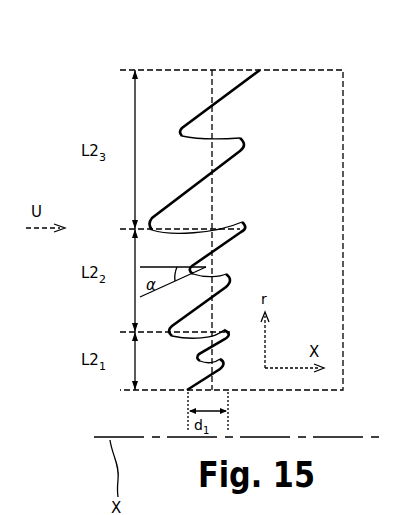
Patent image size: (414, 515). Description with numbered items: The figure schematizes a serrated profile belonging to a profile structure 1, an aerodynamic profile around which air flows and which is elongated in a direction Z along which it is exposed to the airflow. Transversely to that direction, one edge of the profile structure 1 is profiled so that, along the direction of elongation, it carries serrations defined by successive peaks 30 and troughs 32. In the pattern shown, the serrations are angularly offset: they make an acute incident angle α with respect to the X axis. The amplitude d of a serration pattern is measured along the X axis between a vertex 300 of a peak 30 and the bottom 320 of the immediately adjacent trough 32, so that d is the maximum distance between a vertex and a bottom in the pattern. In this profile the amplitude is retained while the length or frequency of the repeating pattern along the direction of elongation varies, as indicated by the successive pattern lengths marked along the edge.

The profile structure 1 is at (261, 71).
The peak 30 is at (235, 202).
The trough 32 is at (234, 80).
The vertex 300 is at (180, 130).
The bottom 320 is at (243, 226).